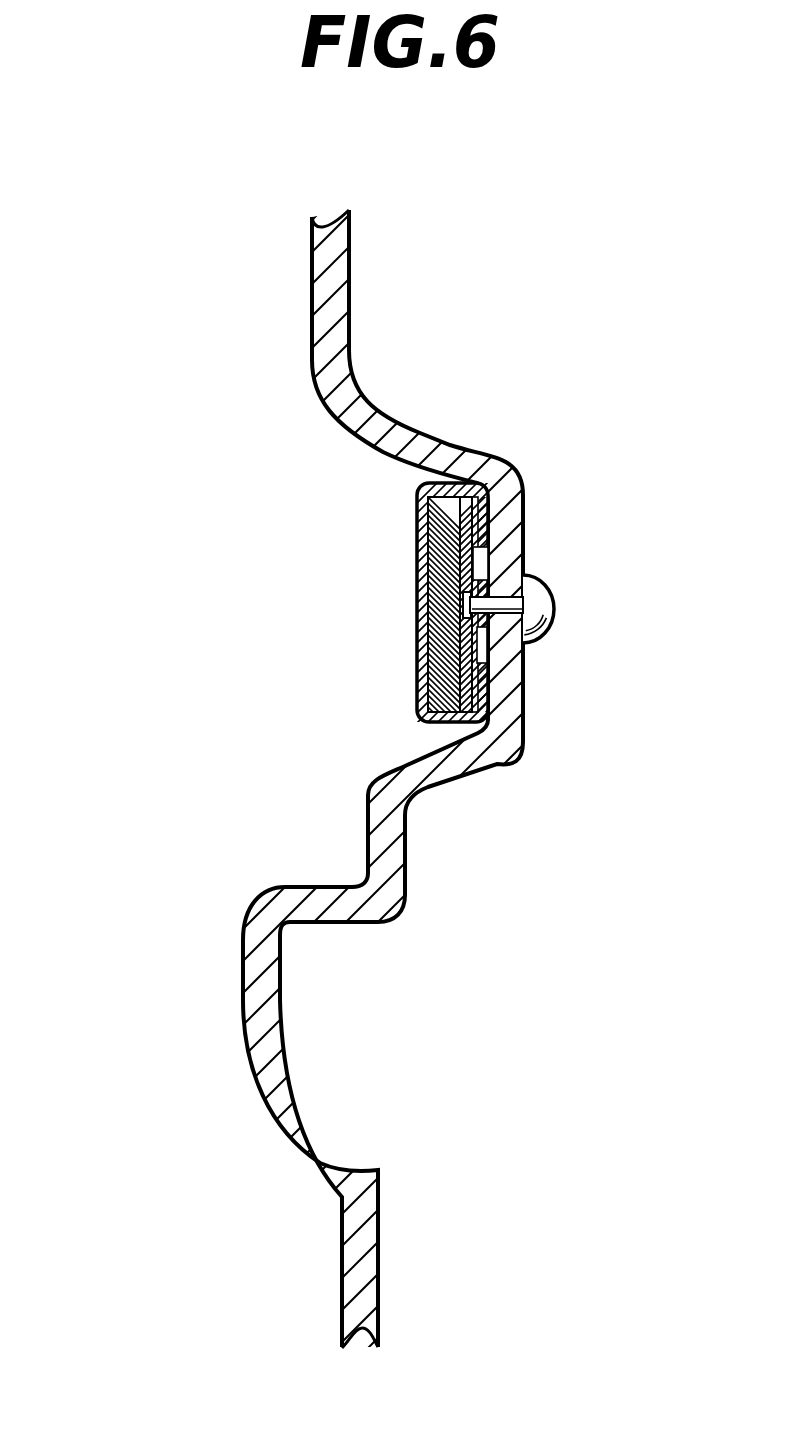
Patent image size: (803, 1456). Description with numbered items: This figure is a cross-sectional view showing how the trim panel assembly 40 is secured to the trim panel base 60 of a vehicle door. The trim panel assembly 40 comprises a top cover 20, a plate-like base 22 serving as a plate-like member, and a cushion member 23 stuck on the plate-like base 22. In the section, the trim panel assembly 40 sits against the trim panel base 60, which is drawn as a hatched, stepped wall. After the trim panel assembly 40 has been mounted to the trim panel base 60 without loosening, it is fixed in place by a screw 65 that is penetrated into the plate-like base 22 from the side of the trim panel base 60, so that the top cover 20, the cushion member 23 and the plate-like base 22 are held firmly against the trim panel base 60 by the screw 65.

The top cover 20 is at (462, 647).
The plate-like base 22 is at (484, 497).
The cushion member 23 is at (427, 555).
The trim panel assembly 40 is at (400, 647).
The trim panel base 60 is at (510, 508).
The screw 65 is at (540, 608).